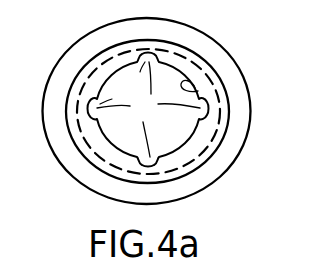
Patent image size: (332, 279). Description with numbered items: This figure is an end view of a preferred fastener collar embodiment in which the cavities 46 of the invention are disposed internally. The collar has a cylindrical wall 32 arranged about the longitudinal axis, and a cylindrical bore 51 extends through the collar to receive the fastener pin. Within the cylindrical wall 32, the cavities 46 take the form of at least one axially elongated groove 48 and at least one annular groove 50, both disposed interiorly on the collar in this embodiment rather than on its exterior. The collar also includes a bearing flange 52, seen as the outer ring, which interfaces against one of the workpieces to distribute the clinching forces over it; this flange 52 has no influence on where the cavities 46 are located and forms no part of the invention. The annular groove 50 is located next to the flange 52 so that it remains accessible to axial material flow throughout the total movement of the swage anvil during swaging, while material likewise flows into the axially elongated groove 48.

The cylindrical wall 32 is at (97, 65).
The cavities 46 is at (141, 66).
The axially elongated groove 48 is at (148, 110).
The annular groove 50 is at (190, 158).
The cylindrical bore 51 is at (198, 91).
The bearing flange 52 is at (220, 60).